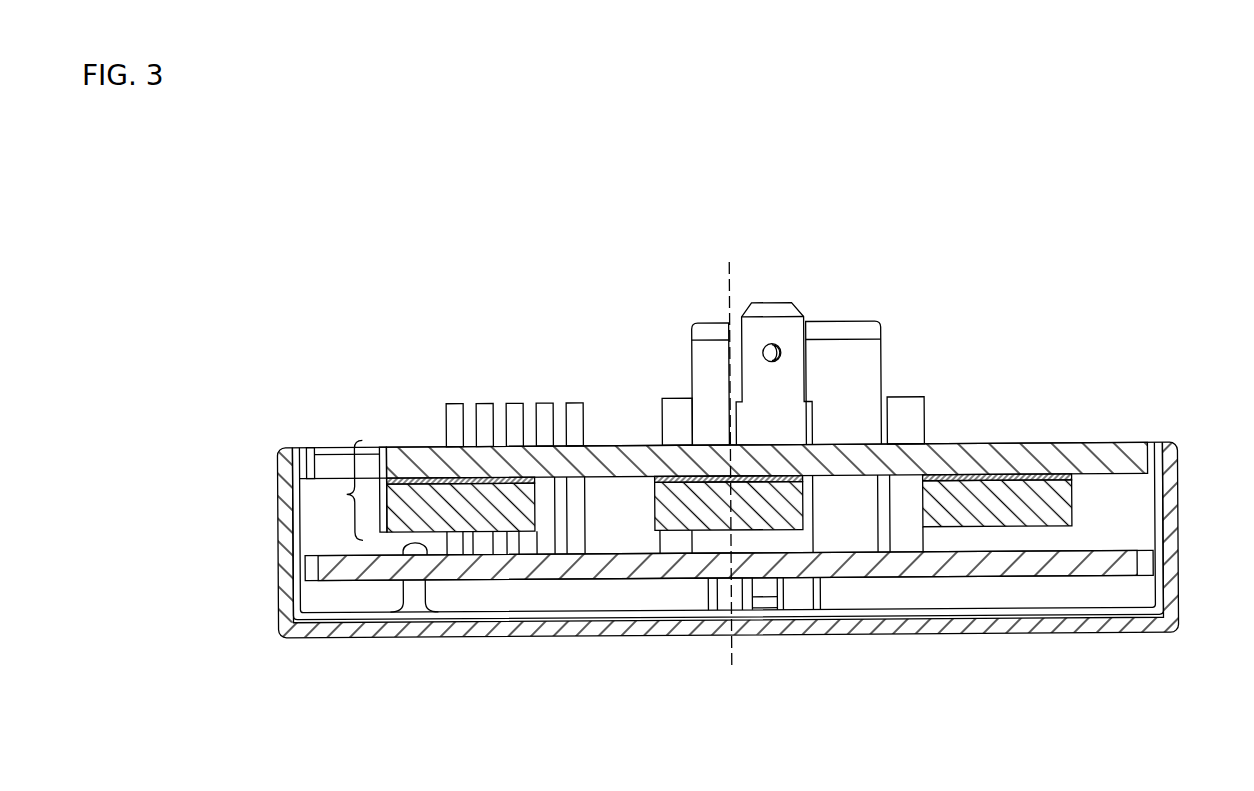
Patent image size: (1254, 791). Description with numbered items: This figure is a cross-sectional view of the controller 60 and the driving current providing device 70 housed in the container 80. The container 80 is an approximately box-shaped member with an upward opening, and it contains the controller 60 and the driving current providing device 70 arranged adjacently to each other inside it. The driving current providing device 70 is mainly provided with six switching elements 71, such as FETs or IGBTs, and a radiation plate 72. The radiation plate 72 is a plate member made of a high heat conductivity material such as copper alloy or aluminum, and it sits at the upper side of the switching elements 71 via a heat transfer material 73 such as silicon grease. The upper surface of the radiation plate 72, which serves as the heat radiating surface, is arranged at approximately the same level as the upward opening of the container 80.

The controller 60 is at (1065, 556).
The driving current providing device 70 is at (347, 492).
The switching elements 71 is at (452, 518).
The radiation plate 72 is at (958, 460).
The heat transfer material 73 is at (410, 465).
The container 80 is at (1108, 624).